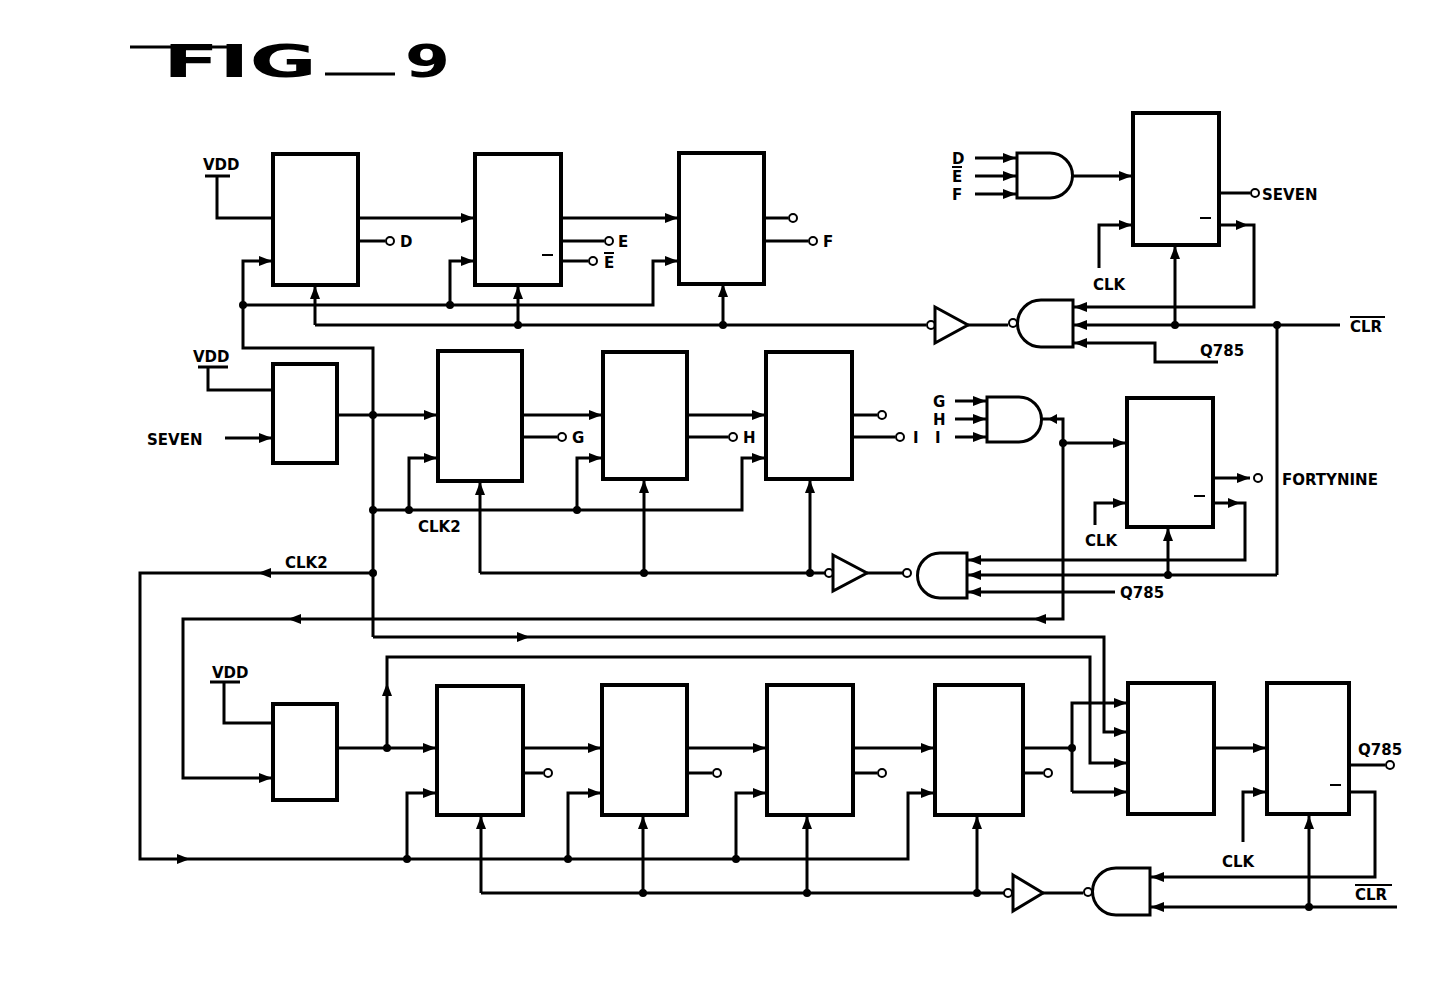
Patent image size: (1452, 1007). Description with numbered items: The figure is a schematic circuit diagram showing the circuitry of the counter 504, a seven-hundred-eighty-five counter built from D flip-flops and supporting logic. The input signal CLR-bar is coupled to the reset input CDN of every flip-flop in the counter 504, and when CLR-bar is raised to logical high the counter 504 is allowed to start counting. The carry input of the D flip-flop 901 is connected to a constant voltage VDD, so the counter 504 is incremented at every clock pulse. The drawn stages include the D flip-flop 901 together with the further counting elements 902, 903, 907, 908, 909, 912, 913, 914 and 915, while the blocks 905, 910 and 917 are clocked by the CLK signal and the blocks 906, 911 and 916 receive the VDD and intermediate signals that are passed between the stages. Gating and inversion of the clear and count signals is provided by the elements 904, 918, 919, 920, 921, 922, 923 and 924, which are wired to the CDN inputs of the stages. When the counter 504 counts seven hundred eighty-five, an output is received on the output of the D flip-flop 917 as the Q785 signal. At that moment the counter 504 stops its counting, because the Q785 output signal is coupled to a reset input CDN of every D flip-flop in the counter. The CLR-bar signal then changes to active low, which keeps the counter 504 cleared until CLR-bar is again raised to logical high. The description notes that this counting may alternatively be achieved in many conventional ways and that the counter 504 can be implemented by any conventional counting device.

The counter 504 is at (895, 103).
The D flip-flop 901 is at (298, 181).
The counter stage 902 is at (501, 181).
The counter stage 903 is at (704, 180).
The AND gate 904 is at (1026, 186).
The D flip-flop 905 is at (1159, 140).
The multiplexer 906 is at (300, 464).
The counter stage 907 is at (463, 378).
The counter stage 908 is at (628, 379).
The counter stage 909 is at (792, 379).
The D flip-flop 910 is at (1153, 425).
The multiplexer 911 is at (305, 704).
The counter stage 912 is at (463, 713).
The counter stage 913 is at (628, 712).
The counter stage 914 is at (793, 712).
The counter stage 915 is at (962, 712).
The multiplexer 916 is at (1168, 683).
The D flip-flop 917 is at (1300, 683).
The inverter 918 is at (945, 310).
The AND gate 919 is at (1033, 333).
The AND gate 920 is at (996, 429).
The inverter 921 is at (848, 557).
The AND gate 922 is at (926, 585).
The inverter 923 is at (1018, 878).
The AND gate 924 is at (1108, 902).